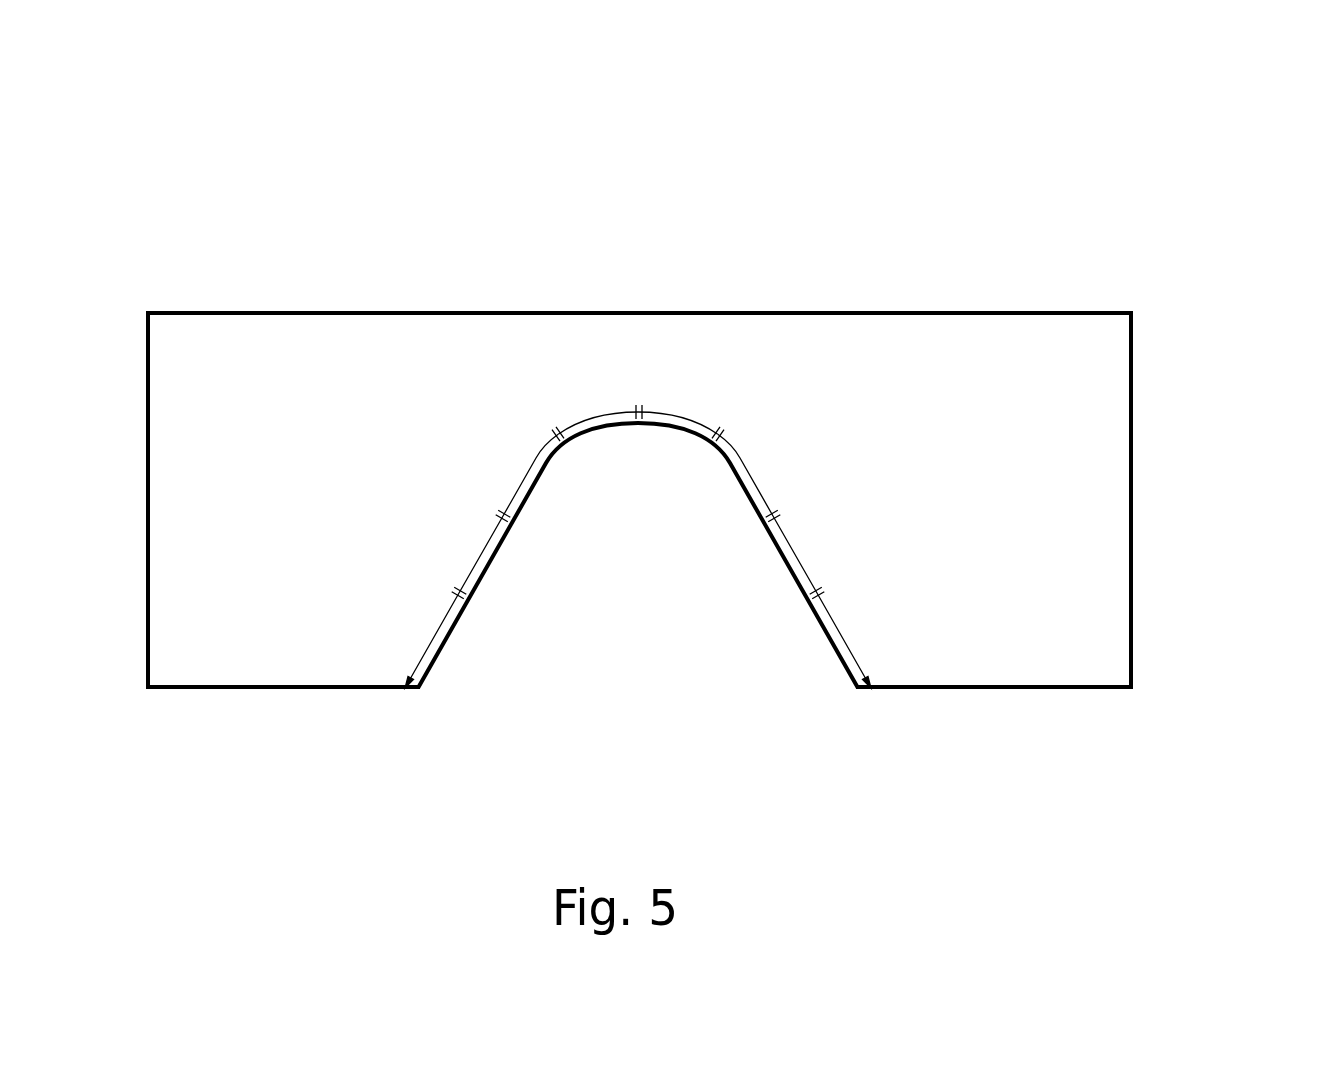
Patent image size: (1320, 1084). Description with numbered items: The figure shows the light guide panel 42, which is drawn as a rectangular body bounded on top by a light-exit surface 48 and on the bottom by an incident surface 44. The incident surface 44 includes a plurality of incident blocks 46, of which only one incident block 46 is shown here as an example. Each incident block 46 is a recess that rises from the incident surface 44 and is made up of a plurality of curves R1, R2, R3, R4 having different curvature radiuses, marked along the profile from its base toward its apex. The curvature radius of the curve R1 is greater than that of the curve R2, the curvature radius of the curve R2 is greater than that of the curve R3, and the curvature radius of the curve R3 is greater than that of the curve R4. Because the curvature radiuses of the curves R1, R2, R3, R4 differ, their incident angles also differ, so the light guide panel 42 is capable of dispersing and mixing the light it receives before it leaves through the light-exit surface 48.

The light guide panel 42 is at (1147, 173).
The incident surface 44 is at (975, 689).
The incident block 46 is at (493, 557).
The light-exit surface 48 is at (973, 311).
The curve R1 is at (640, 637).
The curve R2 is at (639, 551).
The curve R3 is at (642, 471).
The curve R4 is at (638, 408).